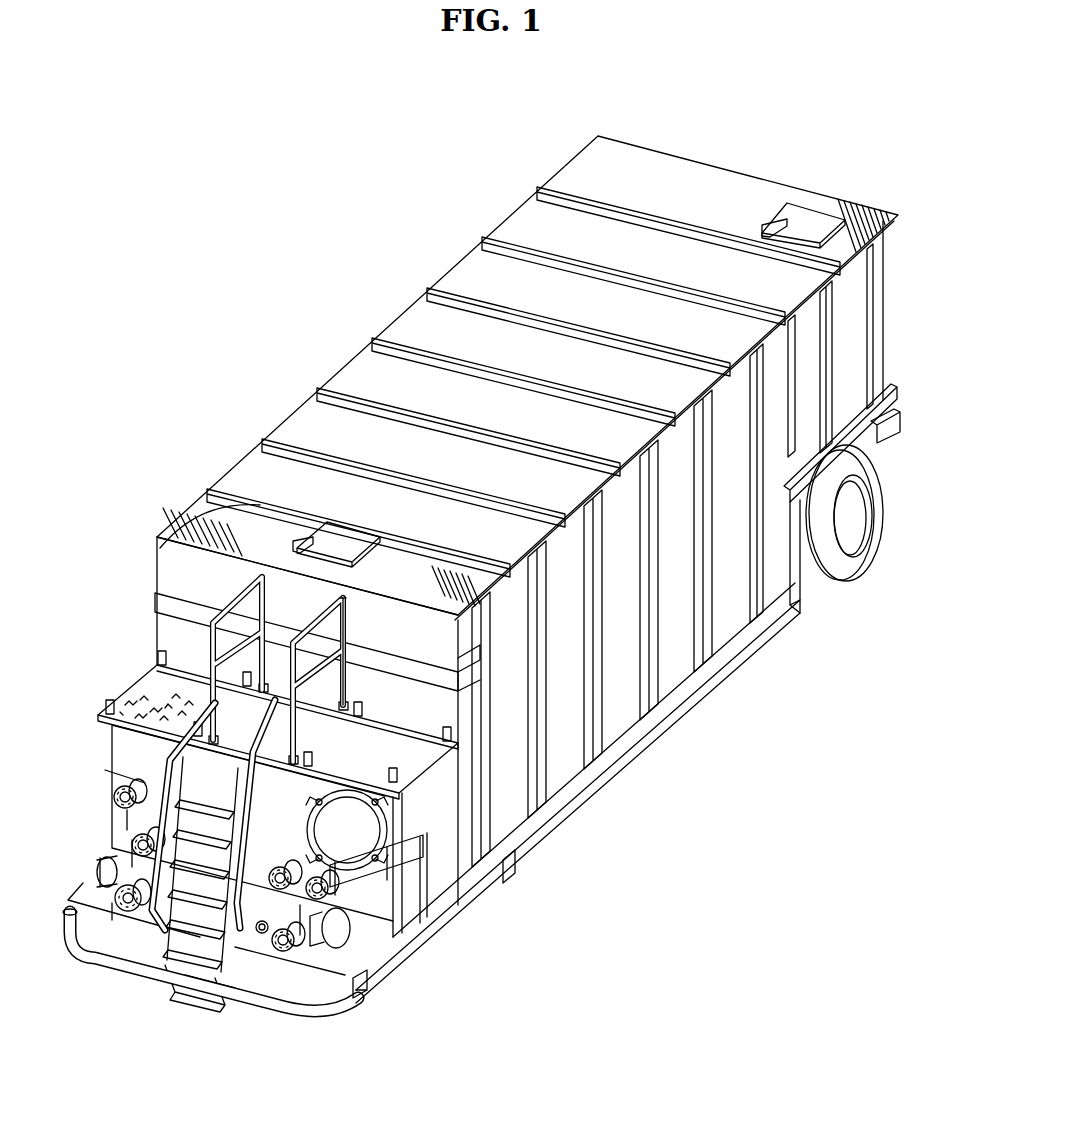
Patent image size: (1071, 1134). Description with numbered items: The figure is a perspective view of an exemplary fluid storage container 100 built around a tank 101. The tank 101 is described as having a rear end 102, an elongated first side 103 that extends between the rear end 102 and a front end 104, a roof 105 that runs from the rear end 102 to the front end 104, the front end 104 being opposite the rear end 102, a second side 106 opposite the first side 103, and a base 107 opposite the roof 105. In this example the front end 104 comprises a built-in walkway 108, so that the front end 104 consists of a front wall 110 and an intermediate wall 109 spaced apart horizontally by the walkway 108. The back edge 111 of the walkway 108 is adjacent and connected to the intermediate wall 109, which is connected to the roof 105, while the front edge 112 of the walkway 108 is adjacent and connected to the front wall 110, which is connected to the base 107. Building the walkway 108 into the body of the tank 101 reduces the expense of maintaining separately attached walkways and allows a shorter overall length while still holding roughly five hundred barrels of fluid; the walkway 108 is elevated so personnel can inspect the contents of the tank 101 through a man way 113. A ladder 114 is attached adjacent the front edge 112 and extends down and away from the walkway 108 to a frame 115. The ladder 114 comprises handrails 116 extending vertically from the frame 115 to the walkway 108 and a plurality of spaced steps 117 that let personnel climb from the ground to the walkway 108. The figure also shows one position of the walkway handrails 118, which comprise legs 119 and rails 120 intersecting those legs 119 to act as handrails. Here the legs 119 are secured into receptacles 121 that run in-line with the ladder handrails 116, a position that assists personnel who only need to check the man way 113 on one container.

The fluid storage container 100 is at (206, 96).
The tank 101 is at (427, 240).
The rear end 102 is at (754, 140).
The first side 103 is at (713, 610).
The front end 104 is at (97, 606).
The roof 105 is at (402, 330).
The second side 106 is at (340, 364).
The base 107 is at (670, 710).
The walkway 108 is at (139, 683).
The intermediate wall 109 is at (165, 566).
The front wall 110 is at (120, 753).
The back edge 111 is at (464, 737).
The front edge 112 is at (397, 802).
The man way 113 is at (340, 540).
The ladder 114 is at (234, 933).
The frame 115 is at (310, 1017).
The handrails 116 is at (200, 952).
The steps 117 is at (197, 912).
The walkway handrails 118 is at (349, 680).
The legs 119 is at (285, 660).
The rails 120 is at (329, 586).
The receptacles 121 is at (327, 720).